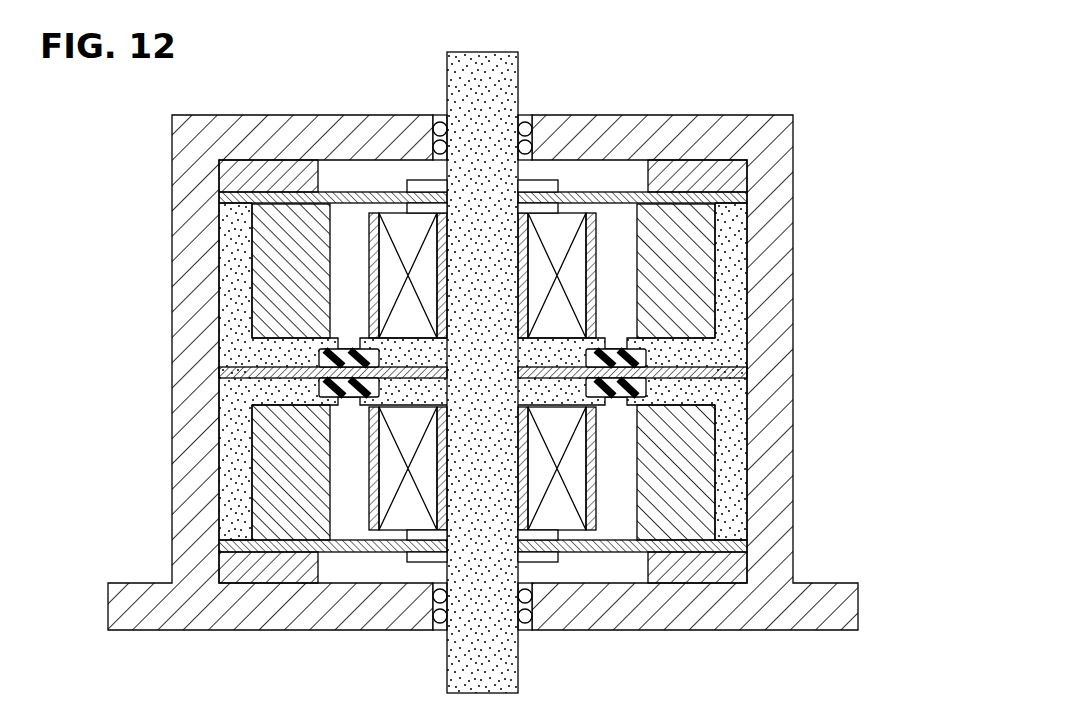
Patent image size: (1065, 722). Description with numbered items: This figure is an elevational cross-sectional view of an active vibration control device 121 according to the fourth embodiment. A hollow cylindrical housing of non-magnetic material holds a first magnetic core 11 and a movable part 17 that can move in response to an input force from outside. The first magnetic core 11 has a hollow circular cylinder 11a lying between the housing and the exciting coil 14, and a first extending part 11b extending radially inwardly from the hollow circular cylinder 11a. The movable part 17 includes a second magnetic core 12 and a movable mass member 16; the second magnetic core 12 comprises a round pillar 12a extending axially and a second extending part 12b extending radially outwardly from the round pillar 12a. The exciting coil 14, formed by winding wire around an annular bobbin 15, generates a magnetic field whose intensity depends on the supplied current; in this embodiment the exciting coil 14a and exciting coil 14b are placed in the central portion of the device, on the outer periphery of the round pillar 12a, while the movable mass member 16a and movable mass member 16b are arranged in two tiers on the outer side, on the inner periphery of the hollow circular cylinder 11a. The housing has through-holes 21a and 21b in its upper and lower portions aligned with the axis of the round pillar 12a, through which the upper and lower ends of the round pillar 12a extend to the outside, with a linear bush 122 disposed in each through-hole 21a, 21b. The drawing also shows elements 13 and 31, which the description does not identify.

The first magnetic core 11 is at (572, 371).
The hollow circular cylinder 11a is at (733, 272).
The first extending part 11b is at (697, 350).
The second magnetic core 12 is at (498, 354).
The round pillar 12a is at (497, 90).
The second extending part 12b is at (541, 185).
The bearing 13 is at (363, 338).
The exciting coil 14 is at (657, 371).
The exciting coil 14a is at (573, 283).
The exciting coil 14b is at (578, 465).
The bobbin 15 is at (597, 257).
The movable mass member 16 is at (375, 372).
The movable mass member 16a is at (273, 293).
The movable mass member 16b is at (407, 472).
The movable part 17 is at (172, 160).
The through-hole 21a is at (440, 116).
The through-hole 21b is at (438, 630).
The yoke plate 31 is at (360, 192).
The active vibration control device 121 is at (828, 88).
The linear bush 122 is at (524, 630).